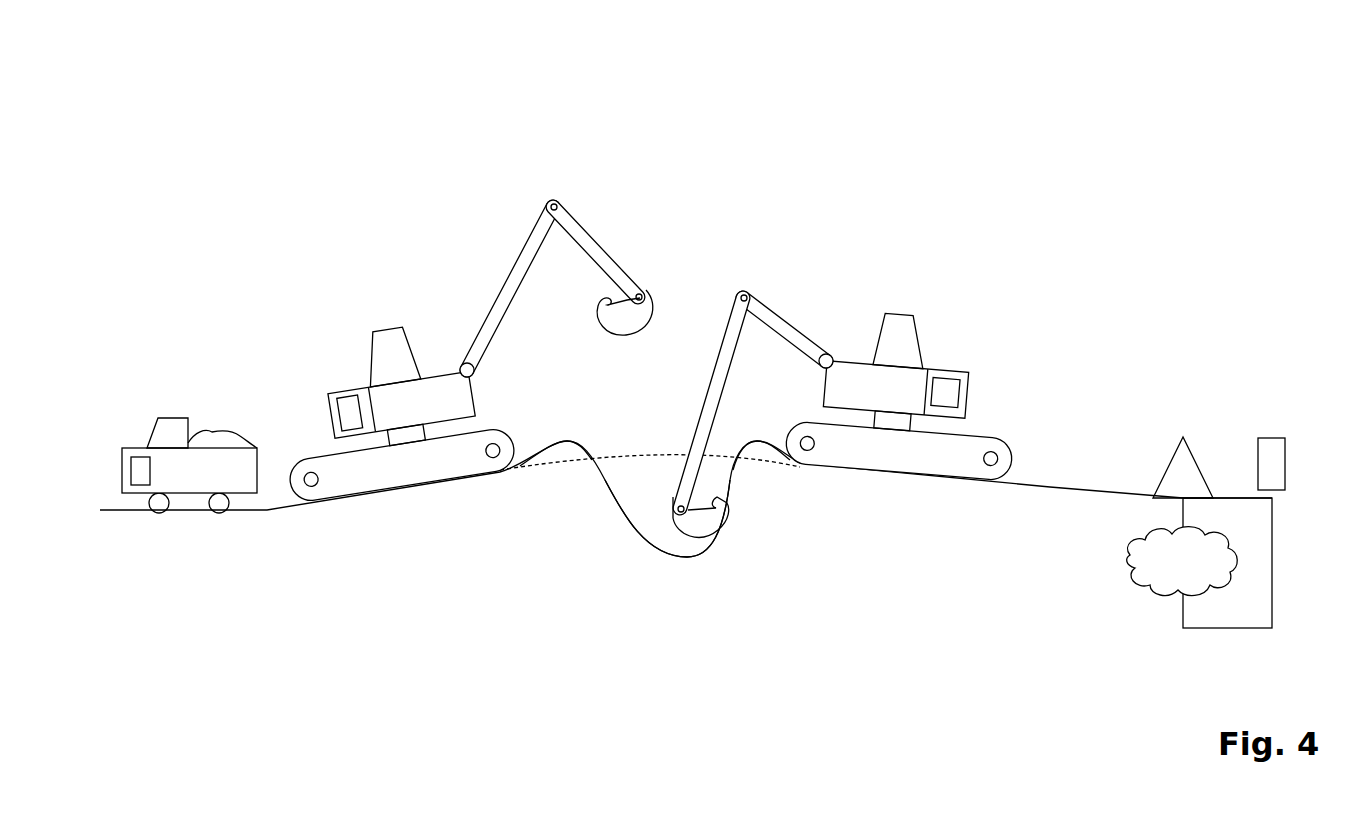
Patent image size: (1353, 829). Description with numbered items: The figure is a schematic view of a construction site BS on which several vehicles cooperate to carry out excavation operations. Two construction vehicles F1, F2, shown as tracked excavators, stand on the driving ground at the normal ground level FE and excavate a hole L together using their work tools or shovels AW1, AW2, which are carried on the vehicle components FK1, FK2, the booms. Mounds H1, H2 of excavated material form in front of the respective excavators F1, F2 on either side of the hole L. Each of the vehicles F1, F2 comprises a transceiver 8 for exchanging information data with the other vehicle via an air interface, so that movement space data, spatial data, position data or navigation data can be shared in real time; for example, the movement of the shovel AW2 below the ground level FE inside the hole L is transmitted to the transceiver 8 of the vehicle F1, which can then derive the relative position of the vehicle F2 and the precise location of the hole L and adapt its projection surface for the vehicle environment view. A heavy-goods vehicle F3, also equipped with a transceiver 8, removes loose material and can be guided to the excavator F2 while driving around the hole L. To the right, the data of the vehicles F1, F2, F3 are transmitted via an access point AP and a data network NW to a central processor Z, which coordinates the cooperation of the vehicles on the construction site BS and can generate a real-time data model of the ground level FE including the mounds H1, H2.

The transceiver 8 is at (135, 488).
The construction vehicle F1 is at (357, 482).
The construction vehicle F2 is at (948, 470).
The heavy-goods vehicle F3 is at (188, 500).
The vehicle component FK1 is at (600, 250).
The vehicle component FK2 is at (735, 322).
The work tool or shovel AW1 is at (623, 325).
The work tool or shovel AW2 is at (705, 527).
The mound H1 is at (565, 452).
The mound H2 is at (758, 452).
The hole L is at (653, 527).
The construction site BS is at (883, 226).
The ground level FE is at (1065, 492).
The access point AP is at (1175, 475).
The central processor Z is at (1273, 450).
The data network NW is at (1157, 575).